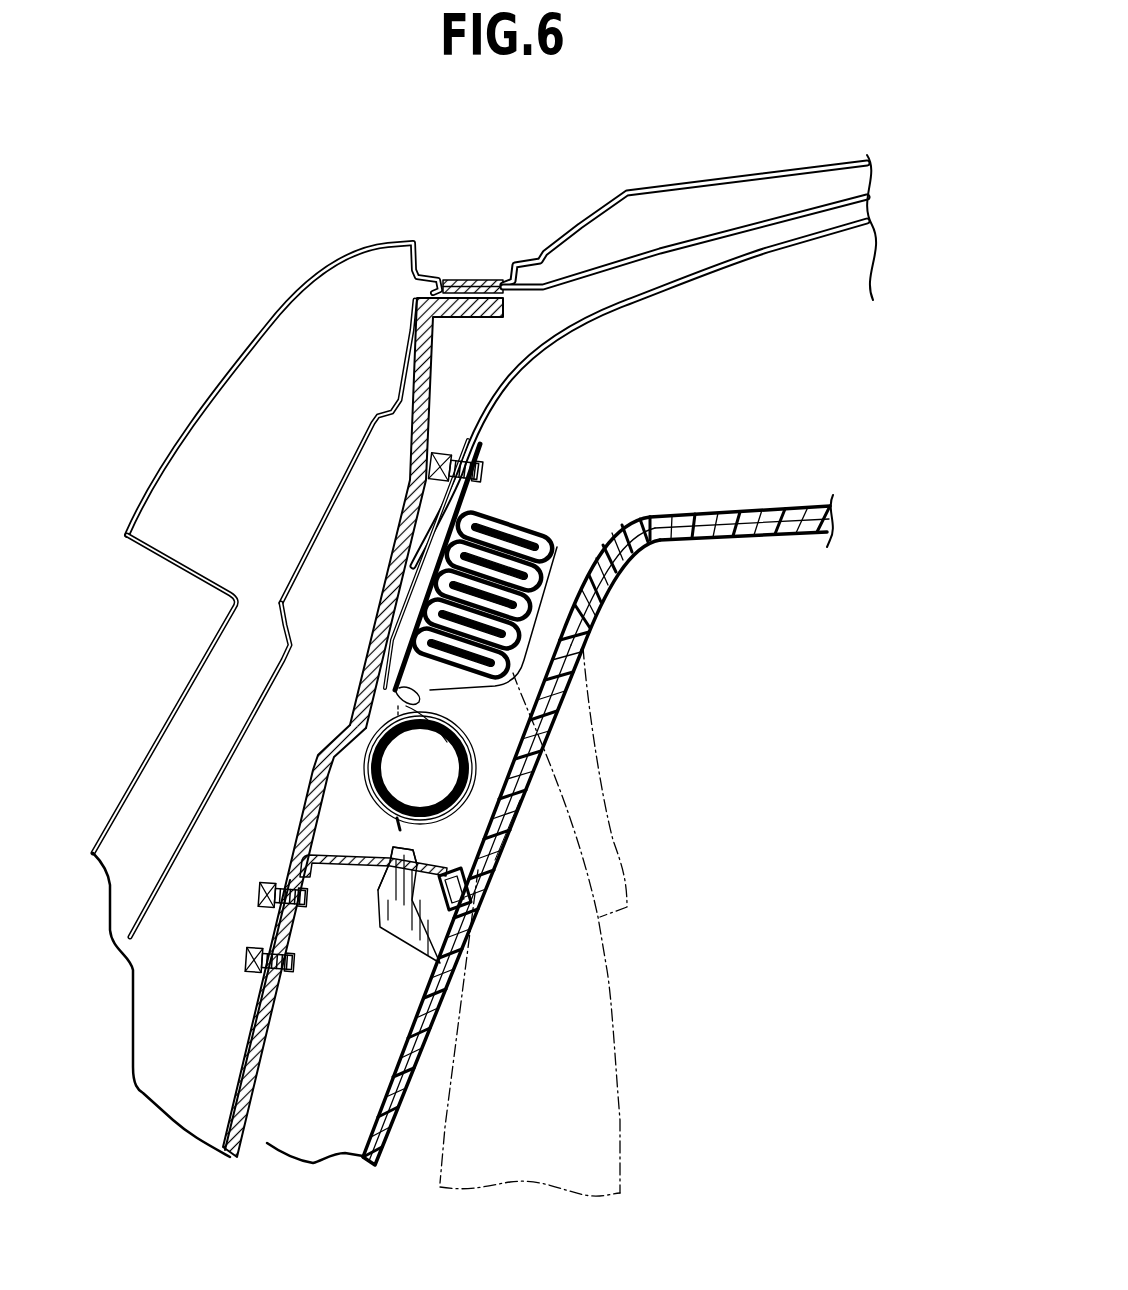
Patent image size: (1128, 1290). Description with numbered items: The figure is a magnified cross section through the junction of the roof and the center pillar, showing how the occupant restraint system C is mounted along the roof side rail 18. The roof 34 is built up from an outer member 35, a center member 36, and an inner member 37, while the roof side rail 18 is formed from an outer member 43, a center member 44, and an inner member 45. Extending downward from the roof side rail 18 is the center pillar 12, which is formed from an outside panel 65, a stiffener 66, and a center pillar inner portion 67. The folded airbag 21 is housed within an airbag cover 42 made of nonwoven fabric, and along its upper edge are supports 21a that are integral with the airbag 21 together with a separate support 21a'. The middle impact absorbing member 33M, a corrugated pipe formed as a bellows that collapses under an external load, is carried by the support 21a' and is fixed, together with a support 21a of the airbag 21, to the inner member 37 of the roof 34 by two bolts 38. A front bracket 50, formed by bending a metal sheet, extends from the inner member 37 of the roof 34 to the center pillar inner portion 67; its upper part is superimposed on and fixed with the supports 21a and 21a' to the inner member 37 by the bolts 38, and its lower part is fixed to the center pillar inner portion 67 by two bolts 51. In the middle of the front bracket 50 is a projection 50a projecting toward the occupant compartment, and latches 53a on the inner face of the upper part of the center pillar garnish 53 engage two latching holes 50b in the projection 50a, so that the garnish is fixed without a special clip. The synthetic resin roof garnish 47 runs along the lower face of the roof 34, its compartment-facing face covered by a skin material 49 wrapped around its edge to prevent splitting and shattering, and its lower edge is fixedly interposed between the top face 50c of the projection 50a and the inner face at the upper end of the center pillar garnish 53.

The center pillar 12 is at (188, 846).
The roof side rail 18 is at (283, 377).
The airbag 21 is at (577, 567).
The support 21a is at (482, 577).
The support 21a' is at (384, 564).
The impact absorbing member 33M is at (389, 748).
The roof 34 is at (644, 309).
The outer member 35 is at (680, 183).
The center member 36 is at (653, 250).
The inner member 37 is at (768, 255).
The bolts 38 is at (487, 480).
The airbag cover 42 is at (598, 867).
The outer member 43 is at (267, 333).
The center member 44 is at (322, 520).
The inner member 45 is at (388, 600).
The roof garnish 47 is at (737, 533).
The skin material 49 is at (503, 830).
The front bracket 50 is at (378, 941).
The projection 50a is at (345, 840).
The latching holes 50b is at (382, 890).
The top face 50c is at (474, 908).
The bolts 51 is at (288, 962).
The center pillar garnish 53 is at (390, 1143).
The latches 53a is at (413, 943).
The outside panel 65 is at (125, 798).
The stiffener 66 is at (183, 845).
The center pillar inner portion 67 is at (245, 1058).
The occupant restraint system C is at (568, 525).